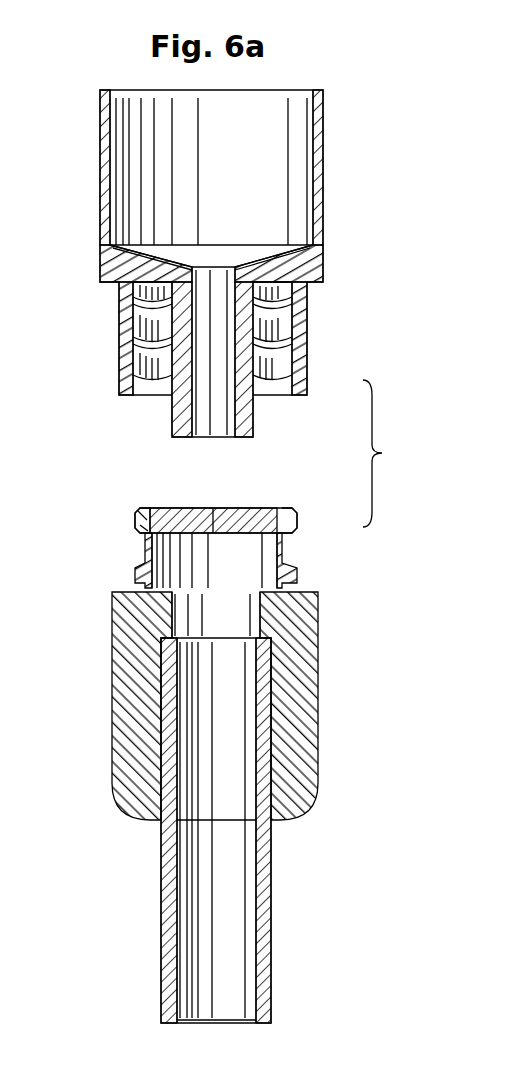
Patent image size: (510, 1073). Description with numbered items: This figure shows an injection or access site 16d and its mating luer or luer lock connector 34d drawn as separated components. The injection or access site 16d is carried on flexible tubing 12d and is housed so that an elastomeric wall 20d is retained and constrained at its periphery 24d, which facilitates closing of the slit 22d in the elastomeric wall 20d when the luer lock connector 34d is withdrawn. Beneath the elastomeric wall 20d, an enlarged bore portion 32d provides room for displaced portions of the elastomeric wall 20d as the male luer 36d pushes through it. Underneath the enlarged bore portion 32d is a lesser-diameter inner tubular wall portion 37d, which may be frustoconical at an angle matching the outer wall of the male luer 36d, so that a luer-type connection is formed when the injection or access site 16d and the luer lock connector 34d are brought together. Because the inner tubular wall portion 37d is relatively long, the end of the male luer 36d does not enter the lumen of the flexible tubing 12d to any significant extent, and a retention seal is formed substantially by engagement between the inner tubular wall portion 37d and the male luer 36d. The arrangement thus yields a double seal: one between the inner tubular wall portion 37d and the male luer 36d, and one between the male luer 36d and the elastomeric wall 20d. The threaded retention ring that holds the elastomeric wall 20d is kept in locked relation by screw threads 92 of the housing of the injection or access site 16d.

The luer lock connector 34d is at (323, 262).
The elastomeric wall 20d is at (307, 340).
The male luer 36d is at (172, 420).
The slit 22d is at (198, 508).
The periphery 24d is at (135, 517).
The enlarged bore portion 32d is at (247, 547).
The screw threads 92 is at (298, 572).
The inner tubular wall portion 37d is at (185, 617).
The injection or access site 16d is at (112, 717).
The flexible tubing 12d is at (162, 878).